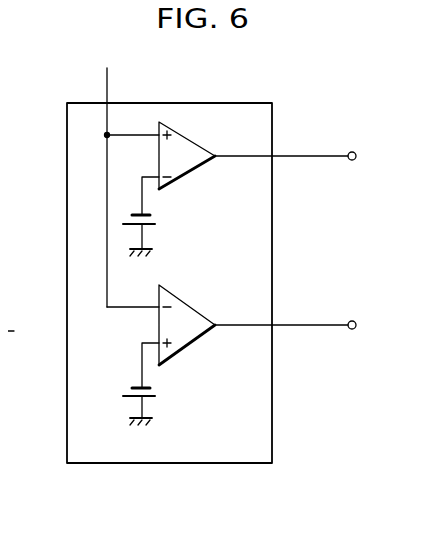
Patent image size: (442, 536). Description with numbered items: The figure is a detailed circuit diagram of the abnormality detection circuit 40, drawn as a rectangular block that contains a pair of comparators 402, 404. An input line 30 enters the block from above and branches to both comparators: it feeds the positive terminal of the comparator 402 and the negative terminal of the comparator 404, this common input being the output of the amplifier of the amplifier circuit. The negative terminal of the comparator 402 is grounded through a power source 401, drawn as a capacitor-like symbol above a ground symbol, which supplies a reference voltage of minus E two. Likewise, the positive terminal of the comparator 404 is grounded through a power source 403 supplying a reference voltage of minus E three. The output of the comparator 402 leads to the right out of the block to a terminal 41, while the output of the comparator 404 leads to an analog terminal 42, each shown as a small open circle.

The input signal line 30 is at (107, 87).
The abnormality detection circuit 40 is at (67, 200).
The terminal 41 is at (352, 151).
The analog terminal 42 is at (354, 320).
The power source 401 is at (150, 227).
The comparator 402 is at (200, 167).
The power source 403 is at (152, 397).
The comparator 404 is at (200, 335).